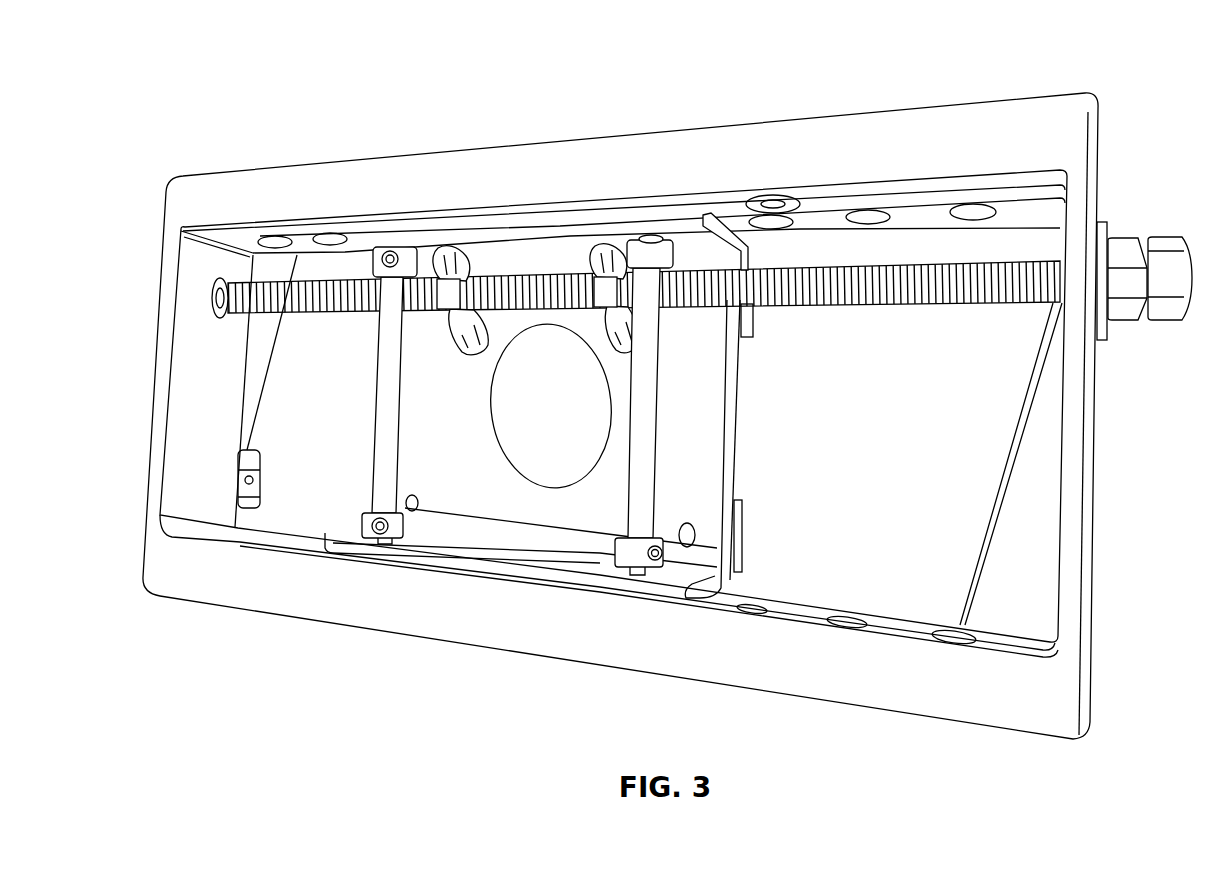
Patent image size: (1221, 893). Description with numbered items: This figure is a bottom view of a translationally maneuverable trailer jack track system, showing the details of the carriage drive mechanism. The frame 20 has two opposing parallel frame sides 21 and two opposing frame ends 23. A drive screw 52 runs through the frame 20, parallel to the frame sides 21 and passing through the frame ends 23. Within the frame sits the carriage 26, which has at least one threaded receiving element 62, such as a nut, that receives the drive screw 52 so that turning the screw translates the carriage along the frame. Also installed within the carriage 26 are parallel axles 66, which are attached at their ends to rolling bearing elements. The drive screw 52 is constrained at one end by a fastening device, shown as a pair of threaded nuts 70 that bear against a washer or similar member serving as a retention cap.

The frame 20 is at (749, 120).
The frame side 21 is at (864, 143).
The frame end 23 is at (153, 362).
The carriage 26 is at (736, 391).
The drive screw 52 is at (922, 303).
The threaded receiving element 62 is at (445, 252).
The axle 66 is at (385, 455).
The threaded nut 70 is at (1163, 322).